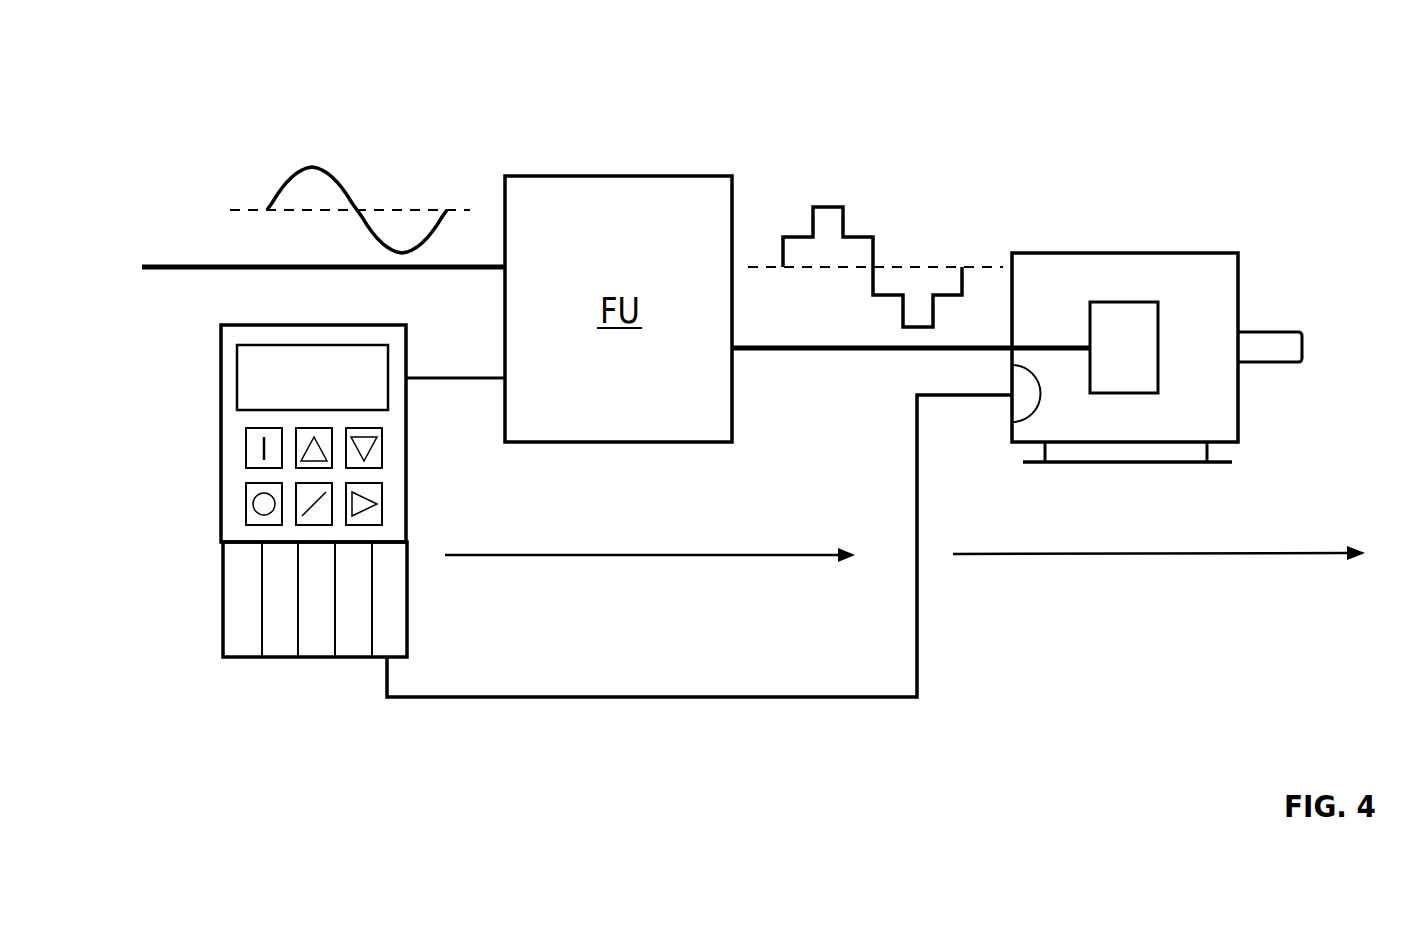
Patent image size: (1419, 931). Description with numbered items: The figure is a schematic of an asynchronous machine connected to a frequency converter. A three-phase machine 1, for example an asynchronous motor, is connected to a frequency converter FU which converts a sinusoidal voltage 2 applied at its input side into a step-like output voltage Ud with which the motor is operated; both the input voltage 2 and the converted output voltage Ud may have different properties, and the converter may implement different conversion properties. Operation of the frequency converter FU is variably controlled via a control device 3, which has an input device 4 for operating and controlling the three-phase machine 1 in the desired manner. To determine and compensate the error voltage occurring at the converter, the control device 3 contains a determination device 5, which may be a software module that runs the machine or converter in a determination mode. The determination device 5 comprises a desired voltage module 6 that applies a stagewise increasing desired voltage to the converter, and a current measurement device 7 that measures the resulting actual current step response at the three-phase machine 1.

The three-phase machine 1 is at (1196, 268).
The sinusoidal voltage 2 is at (321, 140).
The control device 3 is at (279, 531).
The input device 4 is at (376, 455).
The determination device 5 is at (297, 640).
The desired voltage module 6 is at (283, 640).
The current measurement device 7 is at (390, 605).
The step-like output voltage Ud is at (830, 188).